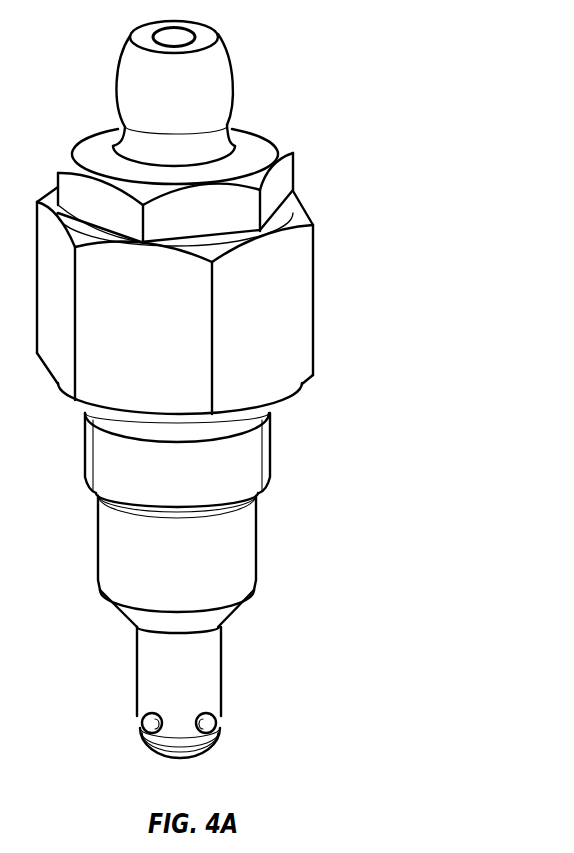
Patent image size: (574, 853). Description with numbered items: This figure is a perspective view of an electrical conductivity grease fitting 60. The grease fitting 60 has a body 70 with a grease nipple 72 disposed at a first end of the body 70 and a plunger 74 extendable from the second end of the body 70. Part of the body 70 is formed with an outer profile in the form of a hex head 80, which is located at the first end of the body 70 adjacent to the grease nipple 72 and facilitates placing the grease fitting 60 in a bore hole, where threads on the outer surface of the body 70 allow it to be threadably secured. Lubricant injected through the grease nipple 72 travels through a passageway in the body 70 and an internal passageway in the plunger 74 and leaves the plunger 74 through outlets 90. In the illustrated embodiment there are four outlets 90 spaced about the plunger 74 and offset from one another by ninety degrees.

The electrical conductivity grease fitting 60 is at (282, 392).
The grease nipple 72 is at (250, 81).
The hex head 80 is at (312, 338).
The body 70 is at (268, 491).
The plunger 74 is at (228, 663).
The outlets 90 is at (145, 719).